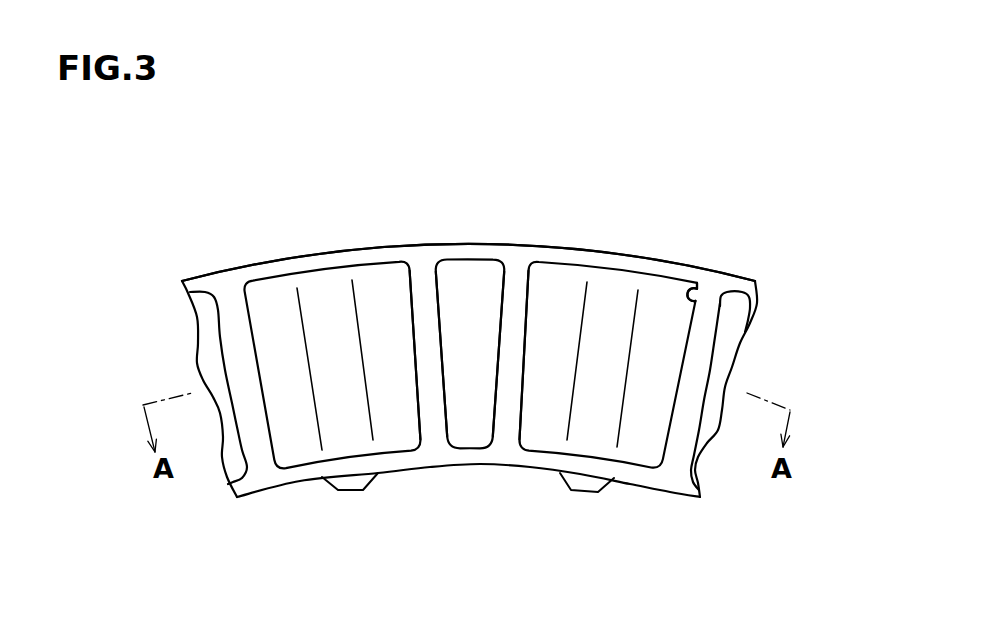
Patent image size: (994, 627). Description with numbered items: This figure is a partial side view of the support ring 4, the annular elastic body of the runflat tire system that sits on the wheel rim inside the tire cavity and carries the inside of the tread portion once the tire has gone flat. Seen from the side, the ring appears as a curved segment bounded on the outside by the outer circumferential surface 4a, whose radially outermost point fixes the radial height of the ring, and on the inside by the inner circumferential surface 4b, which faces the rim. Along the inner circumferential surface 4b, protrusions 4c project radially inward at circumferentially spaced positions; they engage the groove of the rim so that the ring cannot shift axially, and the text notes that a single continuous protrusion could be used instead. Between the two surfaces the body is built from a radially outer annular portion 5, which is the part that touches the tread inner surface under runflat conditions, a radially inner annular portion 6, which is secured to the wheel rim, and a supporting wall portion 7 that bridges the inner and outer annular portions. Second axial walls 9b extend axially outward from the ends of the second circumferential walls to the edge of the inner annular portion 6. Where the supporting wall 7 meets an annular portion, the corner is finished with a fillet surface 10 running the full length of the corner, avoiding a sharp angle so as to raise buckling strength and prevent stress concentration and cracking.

The support ring 4 is at (680, 213).
The outer circumferential surface 4a is at (608, 247).
The inner circumferential surface 4b is at (653, 497).
The protrusion 4c is at (353, 485).
The radially outer annular portion 5 is at (360, 257).
The radially inner annular portion 6 is at (463, 457).
The supporting wall portion 7 is at (655, 348).
The second axial wall 9b is at (440, 317).
The fillet surface 10 is at (697, 297).